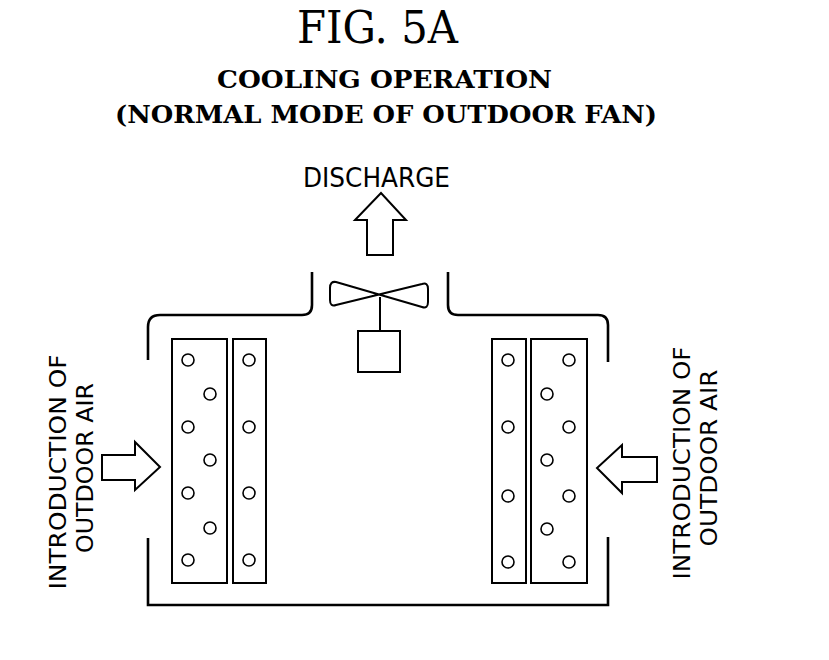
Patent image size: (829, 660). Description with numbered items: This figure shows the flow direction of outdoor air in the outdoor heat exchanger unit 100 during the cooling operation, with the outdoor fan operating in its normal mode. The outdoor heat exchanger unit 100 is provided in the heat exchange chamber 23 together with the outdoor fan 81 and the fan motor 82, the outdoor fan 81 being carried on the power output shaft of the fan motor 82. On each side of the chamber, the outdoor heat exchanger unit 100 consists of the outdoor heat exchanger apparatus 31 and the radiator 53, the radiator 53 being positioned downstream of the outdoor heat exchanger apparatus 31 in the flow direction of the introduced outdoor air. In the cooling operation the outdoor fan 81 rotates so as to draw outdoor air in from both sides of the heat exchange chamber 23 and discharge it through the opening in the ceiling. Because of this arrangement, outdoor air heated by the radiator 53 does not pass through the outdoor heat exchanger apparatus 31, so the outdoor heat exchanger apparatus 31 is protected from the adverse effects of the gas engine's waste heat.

The heat exchange chamber 23 is at (596, 286).
The outdoor heat exchanger apparatus 31 is at (193, 583).
The radiator 53 is at (260, 530).
The outdoor fan 81 is at (417, 288).
The fan motor 82 is at (400, 350).
The outdoor heat exchanger unit 100 is at (150, 506).